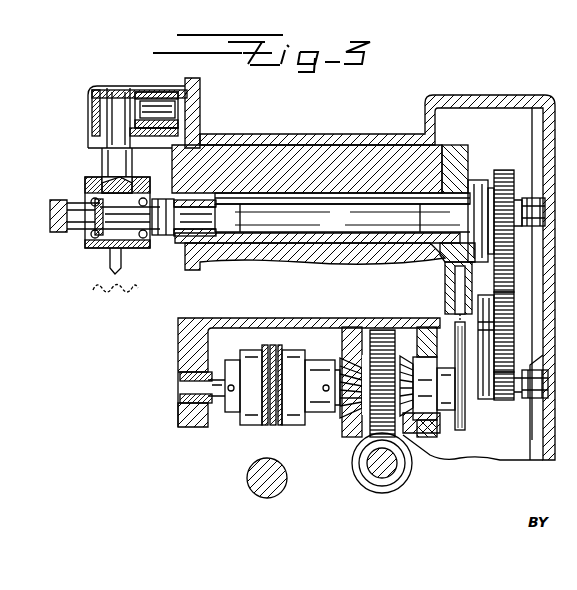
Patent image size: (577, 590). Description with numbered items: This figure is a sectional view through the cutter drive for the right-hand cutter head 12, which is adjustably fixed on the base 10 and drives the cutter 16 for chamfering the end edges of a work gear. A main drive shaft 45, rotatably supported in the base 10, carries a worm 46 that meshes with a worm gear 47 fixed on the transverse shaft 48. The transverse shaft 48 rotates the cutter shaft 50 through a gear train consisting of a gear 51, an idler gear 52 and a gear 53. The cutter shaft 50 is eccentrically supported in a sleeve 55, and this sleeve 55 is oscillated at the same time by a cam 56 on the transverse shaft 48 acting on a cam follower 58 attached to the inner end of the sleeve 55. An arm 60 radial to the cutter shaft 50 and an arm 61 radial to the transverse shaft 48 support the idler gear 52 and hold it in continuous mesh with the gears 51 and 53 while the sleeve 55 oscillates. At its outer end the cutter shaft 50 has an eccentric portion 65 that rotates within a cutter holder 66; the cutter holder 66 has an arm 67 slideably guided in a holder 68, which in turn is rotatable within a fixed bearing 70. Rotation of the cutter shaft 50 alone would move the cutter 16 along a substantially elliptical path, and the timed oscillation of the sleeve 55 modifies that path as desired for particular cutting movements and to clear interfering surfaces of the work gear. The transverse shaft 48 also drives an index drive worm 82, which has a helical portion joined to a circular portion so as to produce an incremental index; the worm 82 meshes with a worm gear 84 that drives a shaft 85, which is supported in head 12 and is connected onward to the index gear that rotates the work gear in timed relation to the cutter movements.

The base 10 is at (192, 336).
The cutter head 12 is at (331, 134).
The cutter 16 is at (110, 265).
The main drive shaft 45 is at (412, 460).
The worm 46 is at (411, 450).
The worm gear 47 is at (385, 332).
The transverse shaft 48 is at (435, 410).
The cutter shaft 50 is at (303, 220).
The gear 51 is at (513, 348).
The idler gear 52 is at (498, 322).
The gear 53 is at (507, 240).
The sleeve 55 is at (275, 152).
The cam 56 is at (460, 332).
The cam follower 58 is at (460, 297).
The arm 60 is at (488, 180).
The arm 61 is at (491, 327).
The eccentric portion 65 is at (144, 228).
The cutter holder 66 is at (102, 182).
The arm 67 is at (112, 90).
The holder 68 is at (137, 100).
The fixed bearing 70 is at (199, 92).
The index drive worm 82 is at (286, 350).
The worm gear 84 is at (220, 472).
The shaft 85 is at (275, 473).